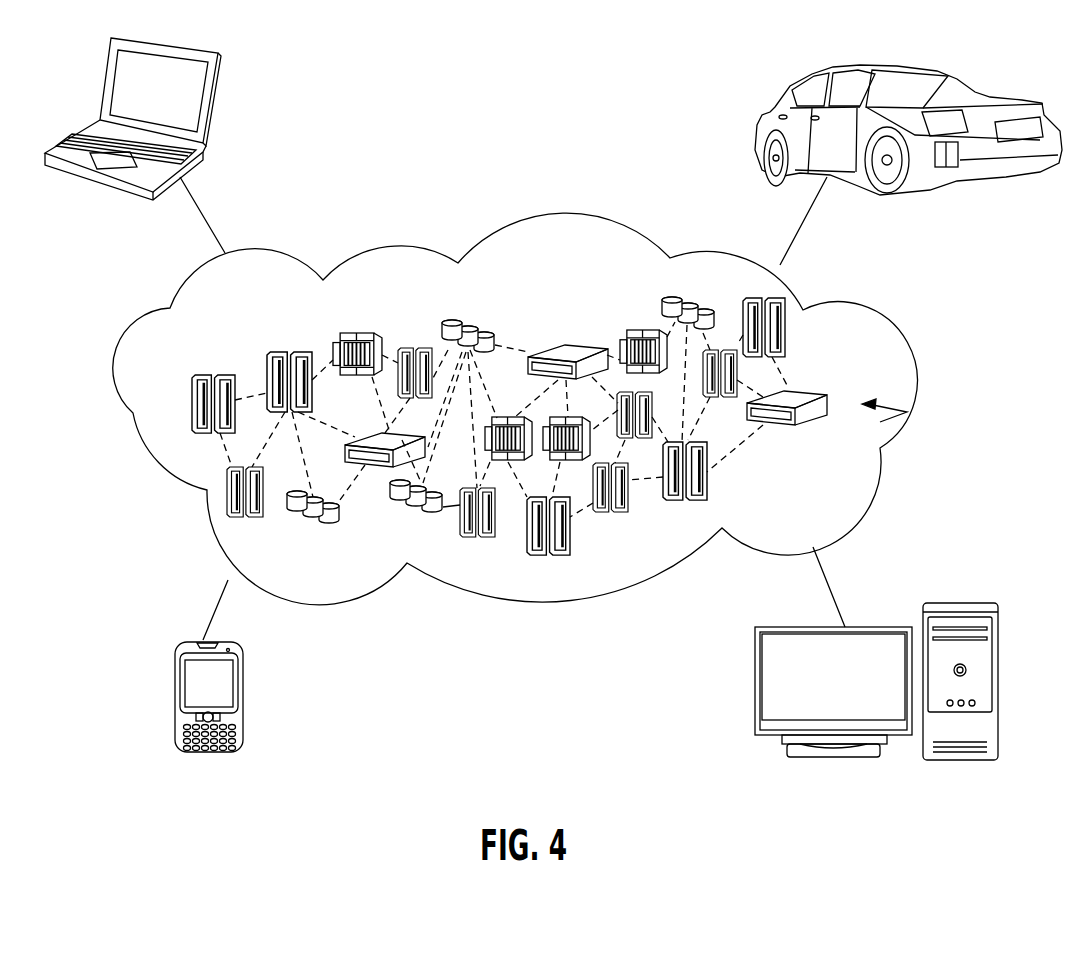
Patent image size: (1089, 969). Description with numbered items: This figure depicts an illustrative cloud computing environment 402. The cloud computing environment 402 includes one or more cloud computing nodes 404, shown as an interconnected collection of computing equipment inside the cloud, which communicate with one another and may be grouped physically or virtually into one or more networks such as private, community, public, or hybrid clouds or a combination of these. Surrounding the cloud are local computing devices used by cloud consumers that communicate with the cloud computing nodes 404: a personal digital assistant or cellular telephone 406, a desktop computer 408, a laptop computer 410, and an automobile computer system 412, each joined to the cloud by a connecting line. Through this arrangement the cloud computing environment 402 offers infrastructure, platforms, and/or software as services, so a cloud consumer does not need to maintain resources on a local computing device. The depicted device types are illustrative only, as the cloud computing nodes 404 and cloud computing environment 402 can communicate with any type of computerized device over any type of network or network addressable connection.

The cloud computing environment 402 is at (887, 322).
The cloud computing nodes 404 is at (880, 422).
The personal digital assistant (PDA) or cellular telephone 406 is at (178, 698).
The desktop computer 408 is at (963, 603).
The laptop computer 410 is at (215, 102).
The automobile computer system 412 is at (763, 112).